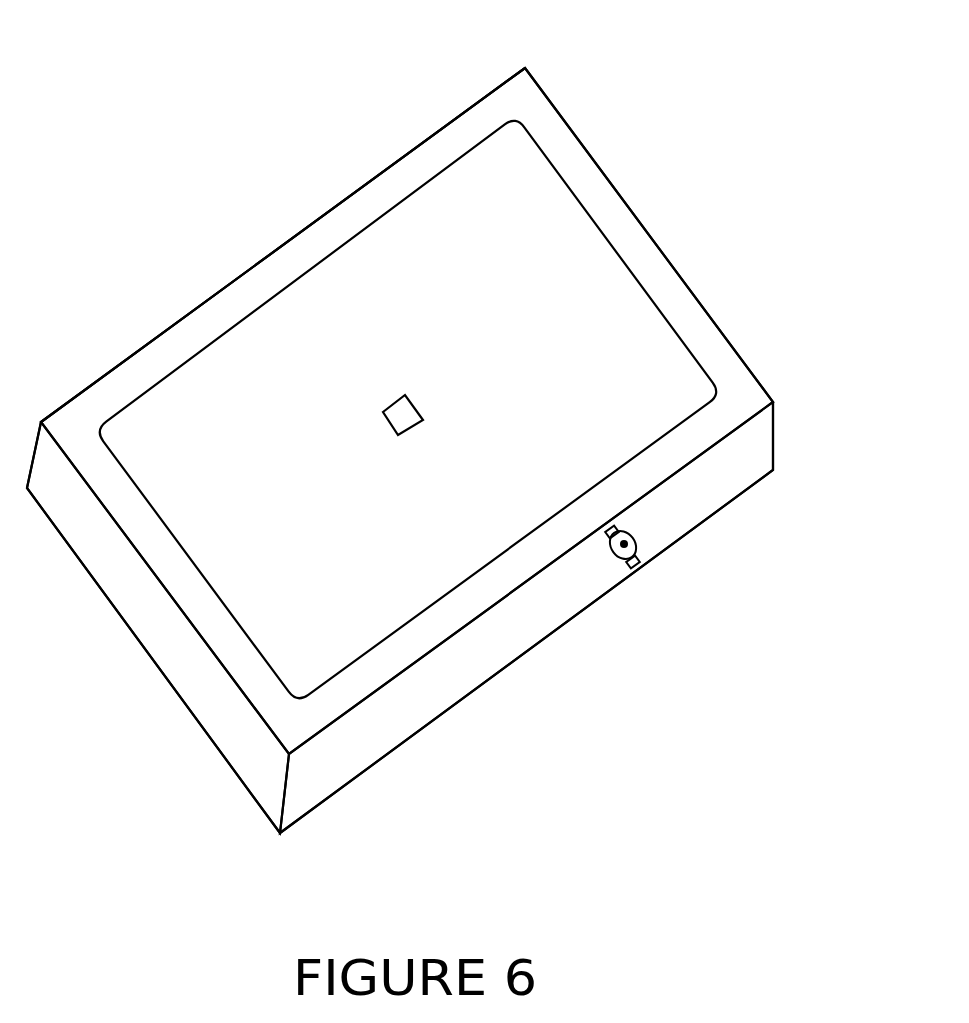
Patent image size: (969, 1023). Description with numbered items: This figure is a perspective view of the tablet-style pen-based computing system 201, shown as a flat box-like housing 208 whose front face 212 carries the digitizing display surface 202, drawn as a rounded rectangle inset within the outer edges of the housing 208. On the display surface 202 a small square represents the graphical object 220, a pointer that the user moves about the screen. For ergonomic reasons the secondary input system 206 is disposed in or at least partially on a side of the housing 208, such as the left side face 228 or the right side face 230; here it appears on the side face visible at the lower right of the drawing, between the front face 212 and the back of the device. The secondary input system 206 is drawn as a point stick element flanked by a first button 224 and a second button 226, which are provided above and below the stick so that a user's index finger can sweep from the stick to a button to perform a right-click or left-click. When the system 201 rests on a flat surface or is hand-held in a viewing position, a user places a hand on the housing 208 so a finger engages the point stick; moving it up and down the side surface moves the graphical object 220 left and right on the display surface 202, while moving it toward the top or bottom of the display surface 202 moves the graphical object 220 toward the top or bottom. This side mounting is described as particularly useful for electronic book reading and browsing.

The pen-based computing system 201 is at (262, 215).
The display surface 202 is at (565, 217).
The secondary input system 206 is at (694, 574).
The housing 208 is at (680, 307).
The front face 212 is at (113, 393).
The graphical object 220 is at (422, 403).
The first button 224 is at (605, 538).
The second button 226 is at (638, 551).
The left side face 228 is at (373, 177).
The right side face 230 is at (755, 460).